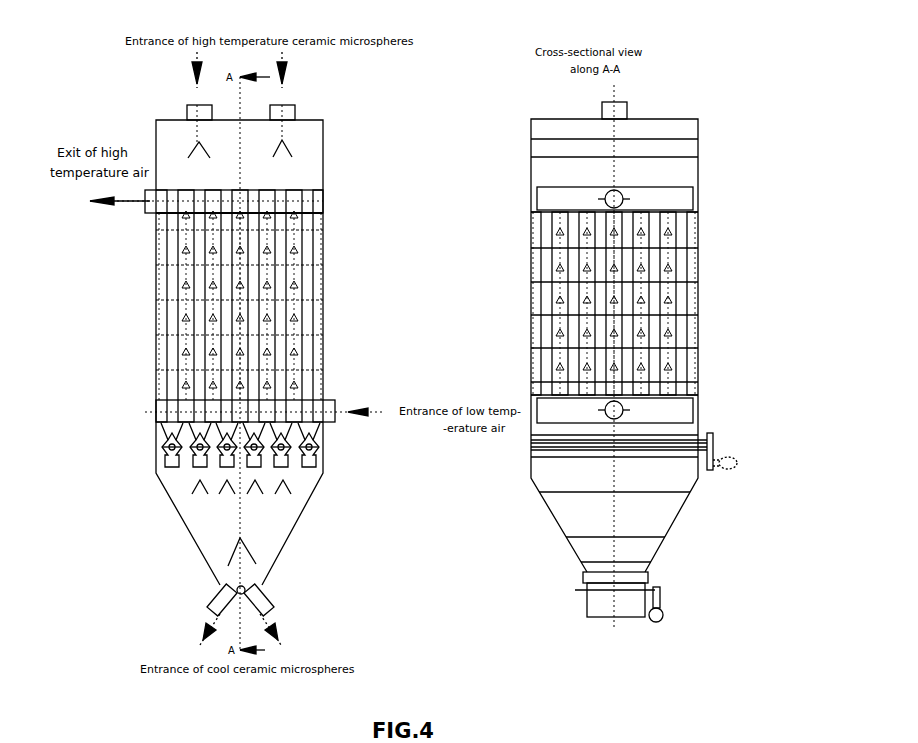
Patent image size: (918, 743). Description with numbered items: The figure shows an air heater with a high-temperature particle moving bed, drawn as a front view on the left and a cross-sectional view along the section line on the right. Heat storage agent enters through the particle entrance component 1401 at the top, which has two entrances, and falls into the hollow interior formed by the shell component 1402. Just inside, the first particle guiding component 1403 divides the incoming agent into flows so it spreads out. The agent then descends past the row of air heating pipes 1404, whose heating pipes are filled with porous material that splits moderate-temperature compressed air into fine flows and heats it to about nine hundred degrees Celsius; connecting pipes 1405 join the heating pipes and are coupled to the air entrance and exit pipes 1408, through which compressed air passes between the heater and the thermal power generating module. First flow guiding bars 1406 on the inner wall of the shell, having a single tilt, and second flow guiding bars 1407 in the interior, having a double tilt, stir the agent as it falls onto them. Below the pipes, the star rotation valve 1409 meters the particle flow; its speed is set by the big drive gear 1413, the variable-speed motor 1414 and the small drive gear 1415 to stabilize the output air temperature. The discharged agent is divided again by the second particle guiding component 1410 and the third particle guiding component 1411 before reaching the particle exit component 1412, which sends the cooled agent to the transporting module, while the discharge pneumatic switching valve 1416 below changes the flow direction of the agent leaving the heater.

The particle entrance component 1401 is at (297, 102).
The shell component 1402 is at (323, 125).
The first particle guiding component 1403 is at (293, 148).
The row of air heating pipes 1404 is at (321, 192).
The connecting pipes 1405 is at (309, 201).
The first flow guiding bars 1406 is at (323, 214).
The second flow guiding bars 1407 is at (323, 233).
The air entrance and exit pipes 1408 is at (333, 403).
The star rotation valve 1409 is at (327, 441).
The second particle guiding component 1410 is at (290, 486).
The third particle guiding component 1411 is at (250, 550).
The particle exit component 1412 is at (268, 598).
The big drive gear 1413 is at (713, 433).
The variable-speed motor 1414 is at (733, 461).
The small drive gear 1415 is at (712, 470).
The discharge pneumatic switching valve 1416 is at (664, 612).